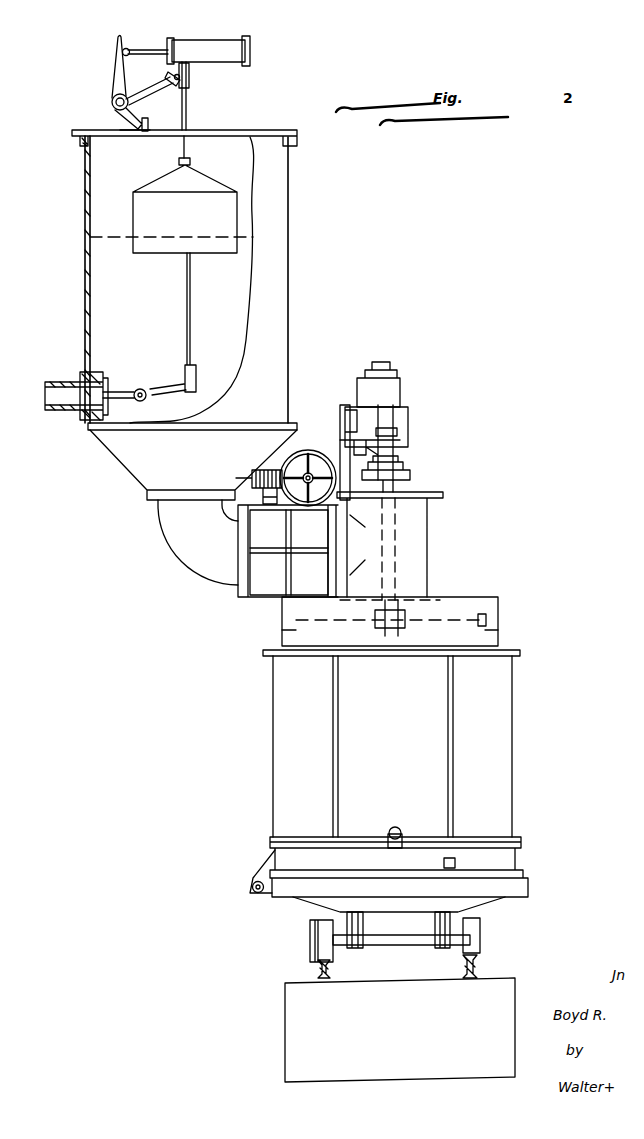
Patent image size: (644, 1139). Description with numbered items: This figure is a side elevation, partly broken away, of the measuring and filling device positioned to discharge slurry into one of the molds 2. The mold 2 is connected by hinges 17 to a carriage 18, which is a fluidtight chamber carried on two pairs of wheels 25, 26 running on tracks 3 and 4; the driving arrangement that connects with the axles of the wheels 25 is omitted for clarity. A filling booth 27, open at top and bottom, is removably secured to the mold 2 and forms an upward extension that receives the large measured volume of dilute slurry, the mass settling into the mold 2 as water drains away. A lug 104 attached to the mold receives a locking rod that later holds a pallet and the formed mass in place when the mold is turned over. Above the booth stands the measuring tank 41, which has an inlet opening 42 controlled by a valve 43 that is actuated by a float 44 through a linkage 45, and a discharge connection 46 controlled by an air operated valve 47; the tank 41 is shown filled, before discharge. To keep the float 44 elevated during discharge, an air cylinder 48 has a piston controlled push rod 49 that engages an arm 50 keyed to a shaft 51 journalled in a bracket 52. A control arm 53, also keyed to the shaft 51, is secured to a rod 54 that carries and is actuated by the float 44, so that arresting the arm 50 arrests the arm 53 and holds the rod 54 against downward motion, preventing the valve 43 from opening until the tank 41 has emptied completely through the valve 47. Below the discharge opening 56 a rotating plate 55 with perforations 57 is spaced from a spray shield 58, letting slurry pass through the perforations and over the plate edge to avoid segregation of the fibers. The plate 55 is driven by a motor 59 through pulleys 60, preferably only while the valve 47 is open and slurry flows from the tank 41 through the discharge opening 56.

The mold 2 is at (522, 858).
The track 3 is at (478, 968).
The track 4 is at (330, 972).
The hinge 17 is at (252, 884).
The carriage 18 is at (290, 900).
The wheel 25 is at (310, 950).
The wheel 26 is at (476, 935).
The filling booth 27 is at (514, 731).
The measuring tank 41 is at (85, 307).
The inlet opening 42 is at (46, 400).
The valve 43 is at (118, 387).
The float 44 is at (134, 215).
The linkage 45 is at (183, 366).
The discharge connection 46 is at (160, 522).
The air operated valve 47 is at (274, 580).
The air cylinder 48 is at (218, 40).
The push rod 49 is at (136, 52).
The arm 50 is at (115, 66).
The shaft 51 is at (111, 101).
The bracket 52 is at (136, 126).
The control arm 53 is at (168, 88).
The rod 54 is at (184, 105).
The rotating plate 55 is at (500, 598).
The discharge opening 56 is at (402, 590).
The perforations 57 is at (455, 608).
The spray shield 58 is at (500, 632).
The motor 59 is at (402, 423).
The pulleys 60 is at (404, 467).
The lug 104 is at (397, 827).